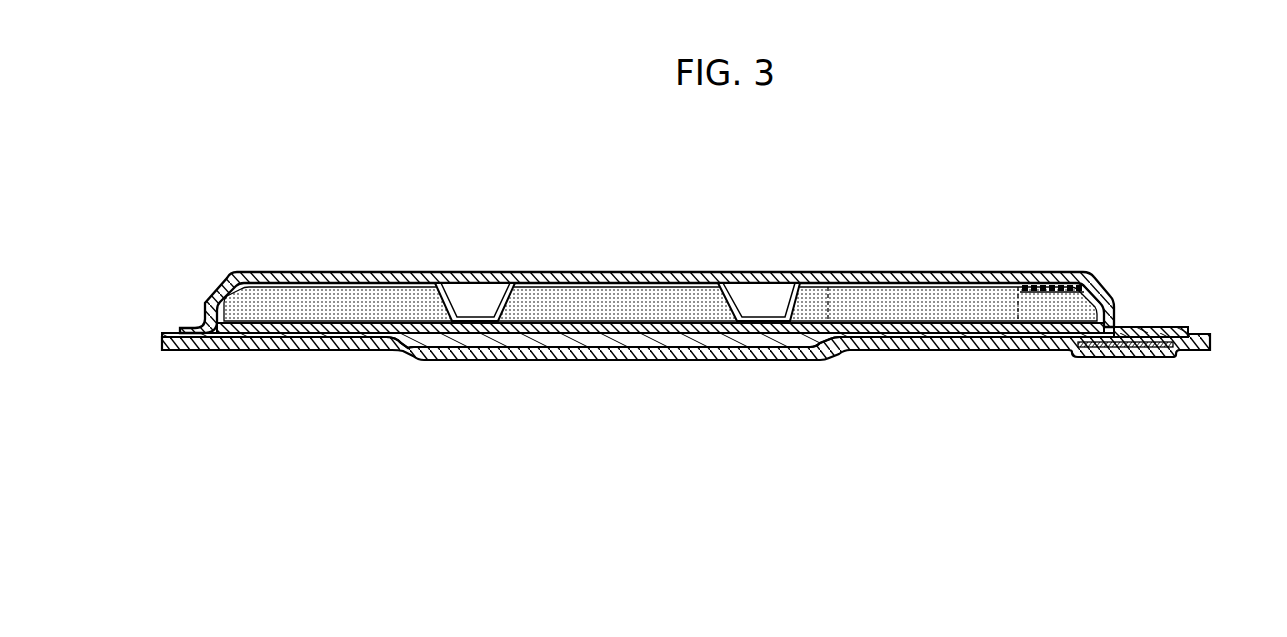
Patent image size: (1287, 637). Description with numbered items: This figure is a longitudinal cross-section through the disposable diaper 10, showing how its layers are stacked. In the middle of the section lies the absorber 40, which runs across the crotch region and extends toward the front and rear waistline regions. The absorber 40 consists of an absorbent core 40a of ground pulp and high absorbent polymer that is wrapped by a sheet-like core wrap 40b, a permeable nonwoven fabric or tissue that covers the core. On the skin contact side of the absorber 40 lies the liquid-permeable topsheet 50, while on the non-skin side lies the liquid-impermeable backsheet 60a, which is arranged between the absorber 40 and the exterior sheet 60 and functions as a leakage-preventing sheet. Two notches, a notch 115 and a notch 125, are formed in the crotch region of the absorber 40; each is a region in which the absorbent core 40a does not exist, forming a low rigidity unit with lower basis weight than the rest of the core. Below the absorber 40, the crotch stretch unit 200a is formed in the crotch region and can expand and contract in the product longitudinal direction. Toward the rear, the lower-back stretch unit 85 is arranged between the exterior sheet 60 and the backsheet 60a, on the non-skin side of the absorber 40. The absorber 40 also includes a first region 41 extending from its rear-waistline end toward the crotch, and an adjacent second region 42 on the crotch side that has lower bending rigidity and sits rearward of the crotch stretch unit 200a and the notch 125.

The disposable diaper 10 is at (1162, 203).
The absorber 40 is at (711, 257).
The absorbent core 40a is at (1108, 314).
The core wrap 40b is at (1113, 293).
The first region 41 is at (1087, 282).
The second region 42 is at (958, 305).
The topsheet 50 is at (1055, 282).
The exterior sheet 60 is at (216, 347).
The backsheet 60a is at (1060, 347).
The lower-back stretch unit 85 is at (1153, 347).
The notch 115 is at (478, 302).
The notch 125 is at (757, 295).
The crotch stretch unit 200a is at (635, 345).